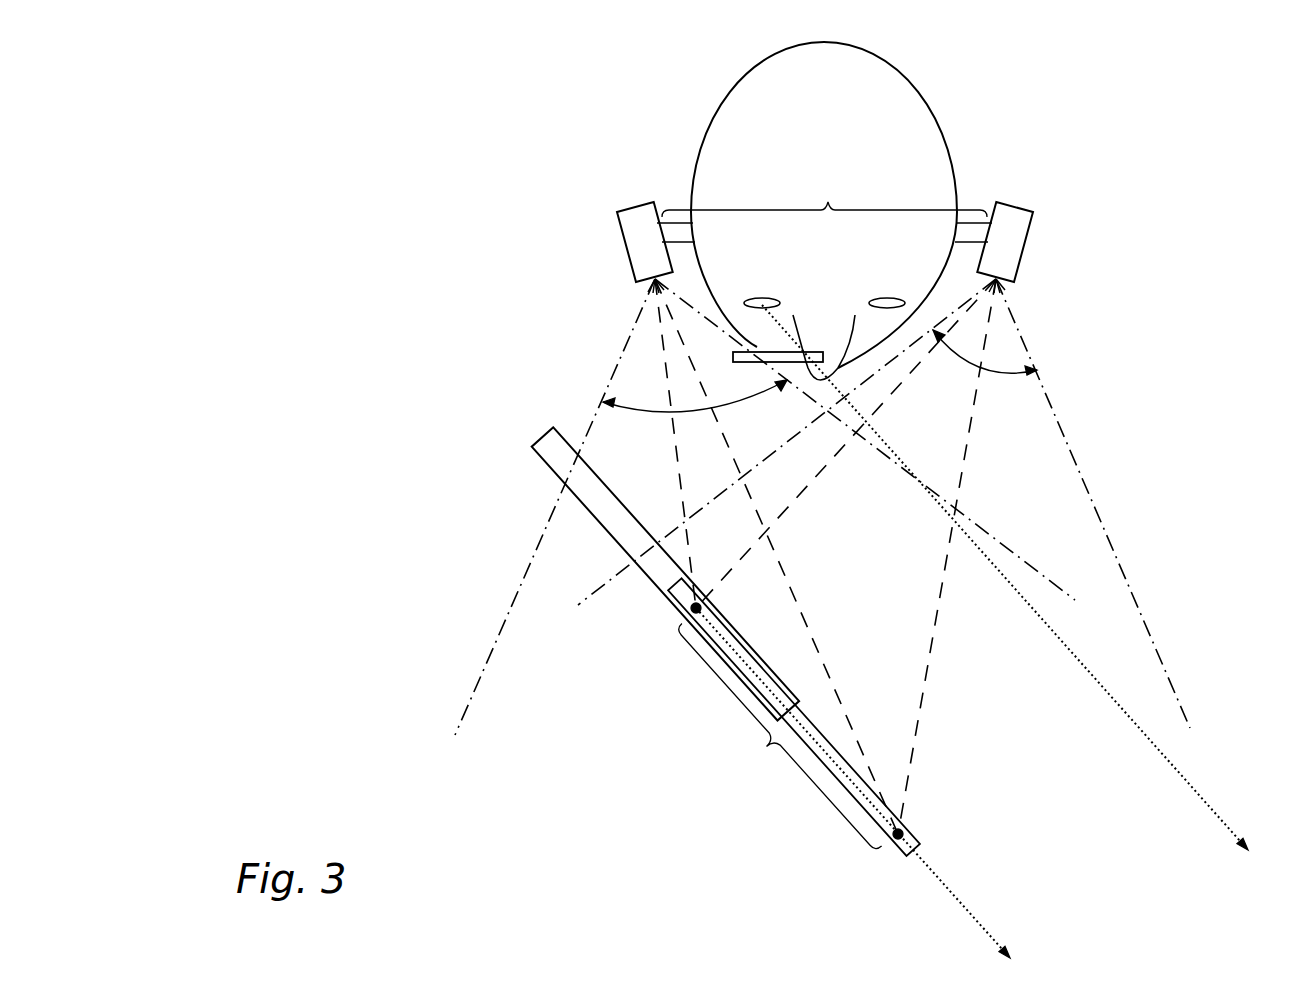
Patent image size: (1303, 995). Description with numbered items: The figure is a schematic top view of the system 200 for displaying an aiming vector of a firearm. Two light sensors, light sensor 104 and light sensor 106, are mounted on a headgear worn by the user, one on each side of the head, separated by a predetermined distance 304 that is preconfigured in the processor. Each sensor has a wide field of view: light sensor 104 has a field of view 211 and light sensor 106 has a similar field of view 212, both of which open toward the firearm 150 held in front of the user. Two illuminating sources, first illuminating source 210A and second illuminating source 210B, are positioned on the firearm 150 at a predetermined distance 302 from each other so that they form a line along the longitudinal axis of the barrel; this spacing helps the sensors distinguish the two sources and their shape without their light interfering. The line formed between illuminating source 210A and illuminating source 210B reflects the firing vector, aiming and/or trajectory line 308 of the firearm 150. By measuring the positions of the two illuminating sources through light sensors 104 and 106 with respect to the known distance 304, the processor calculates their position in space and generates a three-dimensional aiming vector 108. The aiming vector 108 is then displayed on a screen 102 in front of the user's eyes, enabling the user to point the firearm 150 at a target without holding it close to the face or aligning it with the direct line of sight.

The system for displaying an aiming vector of a firearm 200 is at (460, 132).
The light sensor 106 is at (633, 207).
The light sensor 104 is at (1020, 207).
The predetermined distance 304 is at (824, 194).
The screen 102 is at (733, 355).
The field of view 212 is at (640, 412).
The field of view 211 is at (1012, 373).
The firearm 150 is at (540, 458).
The predetermined distance 302 is at (794, 717).
The firing vector, aiming and/or trajectory line 308 is at (957, 888).
The aiming vector 108 is at (1212, 807).
The second illuminating source 210B is at (696, 608).
The first illuminating source 210A is at (902, 830).